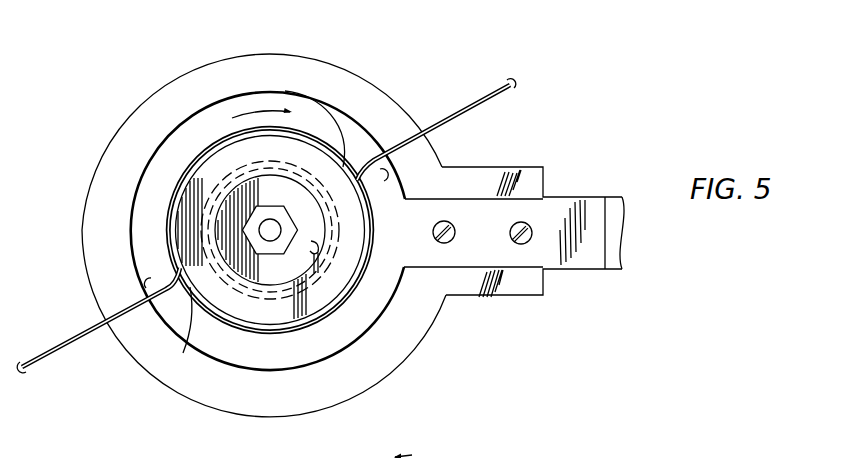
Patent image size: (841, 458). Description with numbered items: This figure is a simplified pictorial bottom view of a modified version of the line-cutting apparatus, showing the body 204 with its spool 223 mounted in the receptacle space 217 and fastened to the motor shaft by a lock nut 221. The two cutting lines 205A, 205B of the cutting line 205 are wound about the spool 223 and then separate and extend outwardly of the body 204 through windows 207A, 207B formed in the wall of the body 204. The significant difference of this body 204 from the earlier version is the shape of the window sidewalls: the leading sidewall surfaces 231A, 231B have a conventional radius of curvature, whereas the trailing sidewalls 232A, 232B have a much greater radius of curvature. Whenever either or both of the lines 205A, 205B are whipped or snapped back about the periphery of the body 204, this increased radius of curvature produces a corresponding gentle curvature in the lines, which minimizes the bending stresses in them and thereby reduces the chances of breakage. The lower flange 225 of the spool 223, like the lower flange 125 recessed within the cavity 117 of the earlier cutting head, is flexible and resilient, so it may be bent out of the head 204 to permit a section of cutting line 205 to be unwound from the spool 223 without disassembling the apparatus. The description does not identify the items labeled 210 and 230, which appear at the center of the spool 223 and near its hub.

The cavity 117 is at (489, 15).
The lower flange 125 is at (589, 5).
The body 204 is at (345, 352).
The cutting line 205 is at (290, 292).
The line 205A is at (511, 90).
The line 205B is at (50, 362).
The window 207A is at (365, 143).
The window 207B is at (158, 337).
The pivot pin 210 is at (265, 228).
The receptacle space 217 is at (360, 257).
The lock nut 221 is at (253, 210).
The spool 223 is at (267, 316).
The lower flange 225 is at (232, 152).
The stop lug 230 is at (313, 245).
The leading sidewall surface 231A is at (390, 181).
The leading sidewall surface 231B is at (140, 279).
The trailing sidewall 232A is at (343, 128).
The trailing sidewall 232B is at (183, 353).